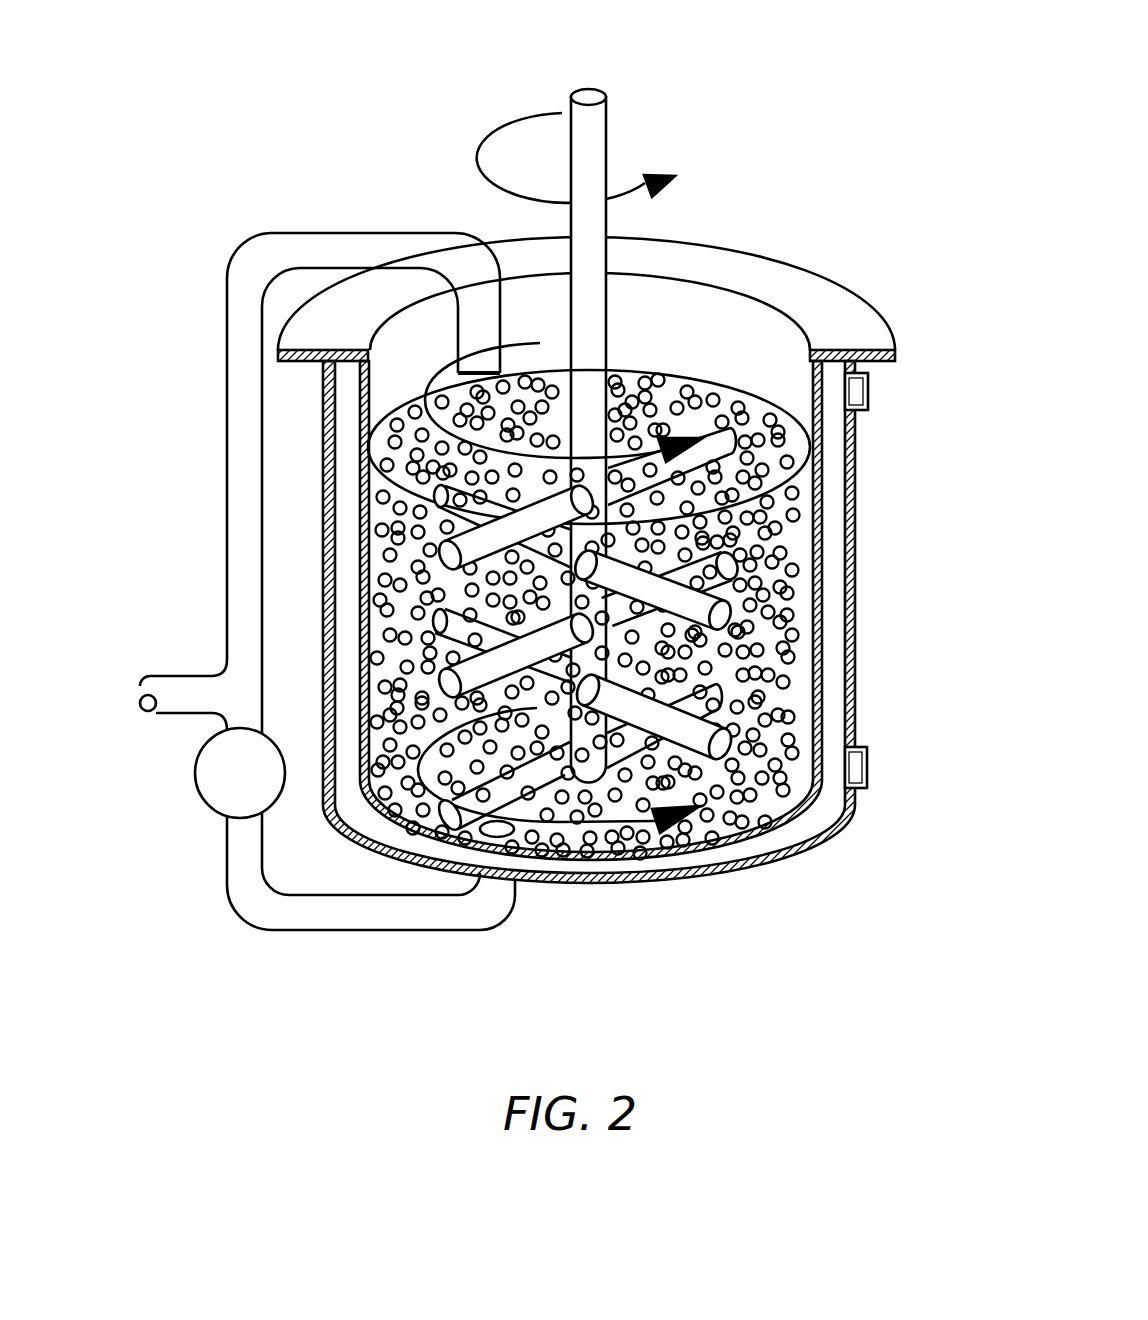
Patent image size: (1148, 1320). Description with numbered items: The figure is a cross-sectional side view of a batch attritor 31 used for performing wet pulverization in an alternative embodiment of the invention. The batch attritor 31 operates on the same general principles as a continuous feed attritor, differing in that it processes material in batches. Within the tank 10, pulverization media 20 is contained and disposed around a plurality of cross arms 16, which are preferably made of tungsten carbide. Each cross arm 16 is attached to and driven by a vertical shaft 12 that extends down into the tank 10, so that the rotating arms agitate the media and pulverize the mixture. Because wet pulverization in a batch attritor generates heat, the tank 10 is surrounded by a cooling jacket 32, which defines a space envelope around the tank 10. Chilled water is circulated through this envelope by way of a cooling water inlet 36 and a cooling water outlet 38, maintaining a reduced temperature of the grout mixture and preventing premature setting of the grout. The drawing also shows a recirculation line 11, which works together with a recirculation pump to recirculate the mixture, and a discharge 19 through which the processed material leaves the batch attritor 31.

The tank 10 is at (822, 477).
The recirculation line 11 is at (232, 908).
The vertical shaft 12 is at (592, 88).
The cross arms 16 is at (643, 717).
The discharge 19 is at (140, 688).
The pulverization media 20 is at (742, 823).
The batch attritor 31 is at (817, 182).
The cooling jacket 32 is at (857, 588).
The cooling water inlet 36 is at (867, 770).
The cooling water outlet 38 is at (868, 392).